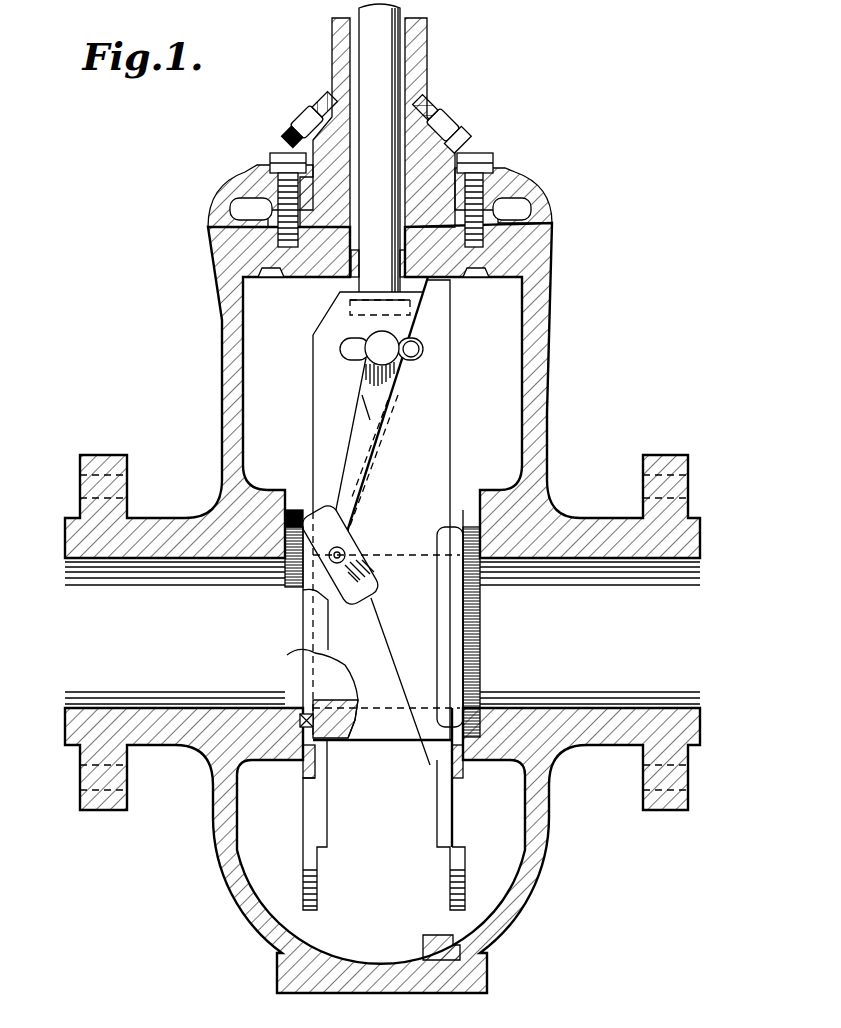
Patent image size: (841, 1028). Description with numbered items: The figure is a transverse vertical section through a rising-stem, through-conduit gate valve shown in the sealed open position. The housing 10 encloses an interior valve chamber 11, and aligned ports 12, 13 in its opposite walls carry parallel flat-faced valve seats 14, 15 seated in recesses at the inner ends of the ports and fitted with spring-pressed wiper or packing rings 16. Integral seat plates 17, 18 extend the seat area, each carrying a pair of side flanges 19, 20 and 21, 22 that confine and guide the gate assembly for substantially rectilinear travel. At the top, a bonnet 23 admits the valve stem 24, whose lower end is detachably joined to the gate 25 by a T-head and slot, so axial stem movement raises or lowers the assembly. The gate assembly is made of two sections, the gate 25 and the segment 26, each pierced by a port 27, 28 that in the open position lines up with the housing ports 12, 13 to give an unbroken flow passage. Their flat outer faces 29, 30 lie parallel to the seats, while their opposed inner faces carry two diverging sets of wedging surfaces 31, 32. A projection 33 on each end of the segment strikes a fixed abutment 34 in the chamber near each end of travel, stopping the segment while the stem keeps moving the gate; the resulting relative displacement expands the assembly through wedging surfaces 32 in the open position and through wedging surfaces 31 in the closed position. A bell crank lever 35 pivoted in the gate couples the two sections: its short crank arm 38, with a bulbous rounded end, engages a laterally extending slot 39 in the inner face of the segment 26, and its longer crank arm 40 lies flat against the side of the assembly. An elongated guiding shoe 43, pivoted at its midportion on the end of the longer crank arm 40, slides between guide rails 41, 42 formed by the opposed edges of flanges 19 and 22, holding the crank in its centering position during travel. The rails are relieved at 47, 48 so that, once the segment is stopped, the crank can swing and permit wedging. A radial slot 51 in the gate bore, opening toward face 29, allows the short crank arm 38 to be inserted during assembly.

The housing 10 is at (220, 392).
The valve chamber 11 is at (510, 390).
The port 12 is at (218, 712).
The port 13 is at (568, 705).
The valve seat 14 is at (300, 670).
The valve seat 15 is at (470, 673).
The wiper or packing ring 16 is at (322, 710).
The seat plate 17 is at (303, 815).
The seat plate 18 is at (463, 820).
The side flange 19 is at (323, 803).
The side flange 20 is at (318, 760).
The side flange 21 is at (440, 793).
The side flange 22 is at (440, 818).
The bonnet 23 is at (258, 278).
The valve stem 24 is at (398, 68).
The gate 25 is at (323, 402).
The segment 26 is at (440, 398).
The port 27 is at (345, 702).
The port 28 is at (486, 681).
The outer face 29 is at (313, 457).
The outer face 30 is at (452, 448).
The wedging surfaces 31 is at (370, 485).
The wedging surfaces 32 is at (378, 625).
The projection 33 is at (448, 284).
The fixed abutment 34 is at (432, 935).
The bell crank lever 35 is at (357, 395).
The short crank arm 38 is at (400, 356).
The slot 39 is at (425, 351).
The longer crank arm 40 is at (357, 437).
The guide rail 41 is at (328, 646).
The guide rail 42 is at (434, 642).
The guiding shoe 43 is at (372, 580).
The relieved portion 47 is at (303, 580).
The relieved portion 48 is at (452, 745).
The radial slot 51 is at (343, 352).